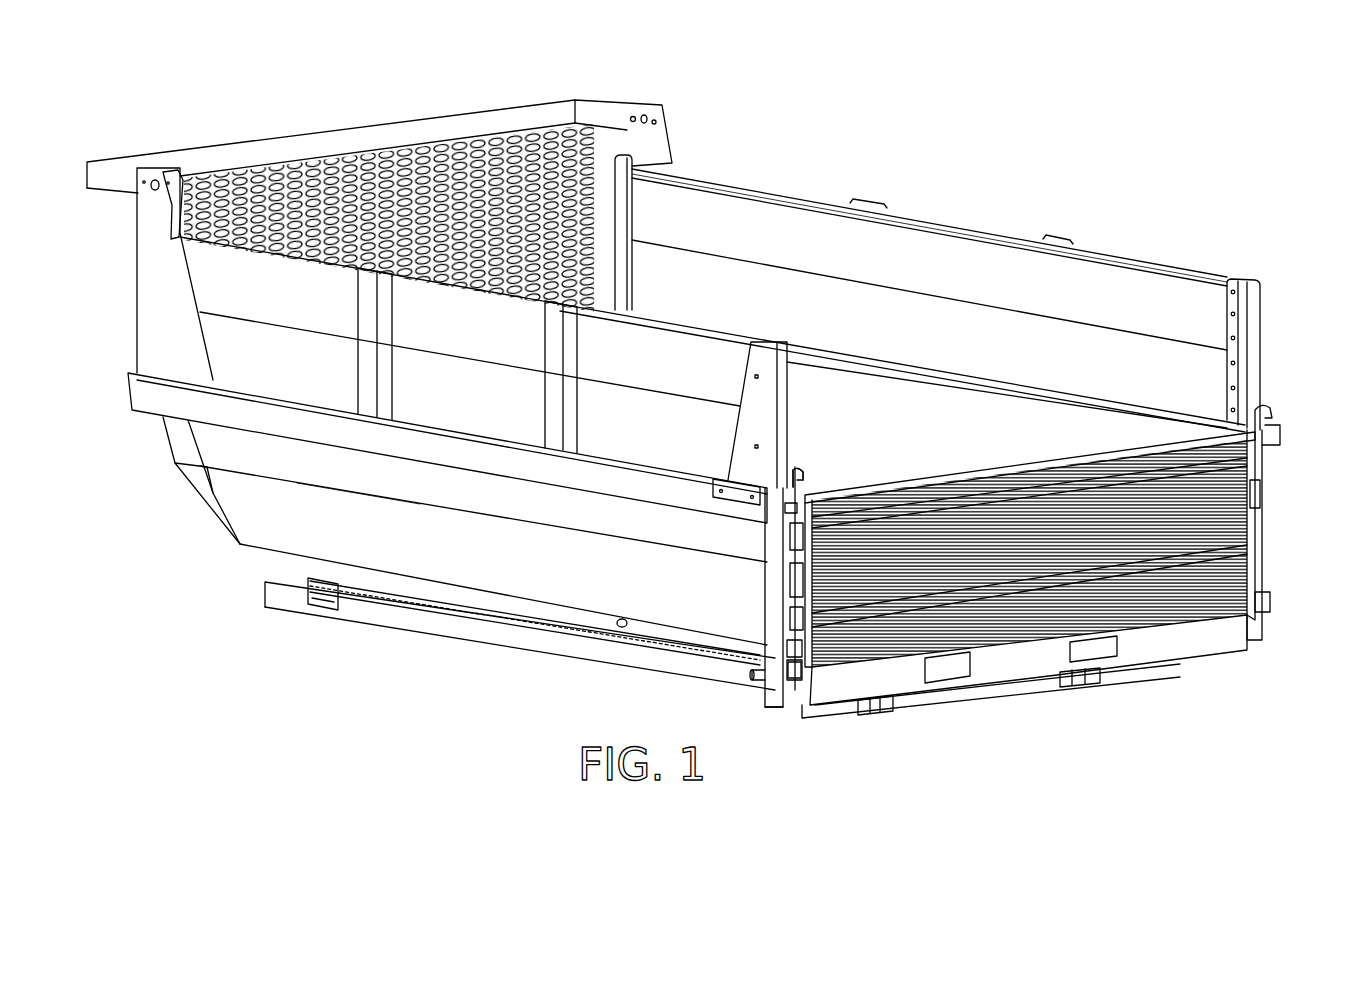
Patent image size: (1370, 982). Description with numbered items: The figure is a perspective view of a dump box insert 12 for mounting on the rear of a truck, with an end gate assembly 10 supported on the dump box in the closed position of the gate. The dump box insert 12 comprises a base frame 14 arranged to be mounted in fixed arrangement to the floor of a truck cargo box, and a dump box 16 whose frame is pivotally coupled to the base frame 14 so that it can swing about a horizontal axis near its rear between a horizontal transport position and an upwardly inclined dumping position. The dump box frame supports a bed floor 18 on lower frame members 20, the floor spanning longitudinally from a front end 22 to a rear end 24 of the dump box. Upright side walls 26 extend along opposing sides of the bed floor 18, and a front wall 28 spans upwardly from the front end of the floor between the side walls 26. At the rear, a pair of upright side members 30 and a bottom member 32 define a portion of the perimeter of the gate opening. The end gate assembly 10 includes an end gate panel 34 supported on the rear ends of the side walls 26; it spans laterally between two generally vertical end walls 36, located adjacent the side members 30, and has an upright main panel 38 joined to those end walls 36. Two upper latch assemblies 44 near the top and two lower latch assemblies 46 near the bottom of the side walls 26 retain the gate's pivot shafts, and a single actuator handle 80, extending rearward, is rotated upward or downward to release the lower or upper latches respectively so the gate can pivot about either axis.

The end gate assembly 10 is at (1290, 405).
The dump box insert 12 is at (870, 100).
The base frame 14 is at (432, 640).
The dump box 16 is at (313, 560).
The bed floor 18 is at (361, 527).
The lower frame members 20 is at (523, 605).
The front end 22 is at (218, 552).
The rear end 24 is at (748, 714).
The side walls 26 is at (457, 517).
The front wall 28 is at (600, 276).
The side members 30 is at (765, 615).
The bottom member 32 is at (887, 687).
The end gate panel 34 is at (1150, 570).
The end walls 36 is at (837, 643).
The main panel 38 is at (1017, 555).
The upper latch assemblies 44 is at (815, 475).
The lower latch assemblies 46 is at (795, 690).
The actuator handle 80 is at (750, 678).